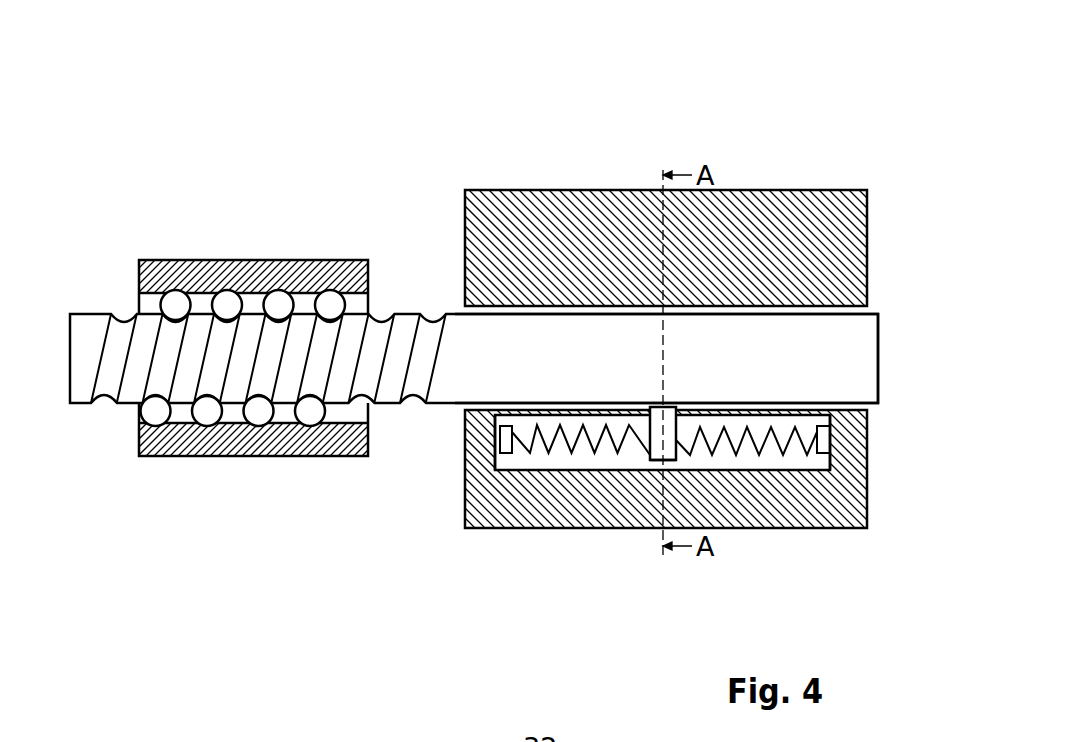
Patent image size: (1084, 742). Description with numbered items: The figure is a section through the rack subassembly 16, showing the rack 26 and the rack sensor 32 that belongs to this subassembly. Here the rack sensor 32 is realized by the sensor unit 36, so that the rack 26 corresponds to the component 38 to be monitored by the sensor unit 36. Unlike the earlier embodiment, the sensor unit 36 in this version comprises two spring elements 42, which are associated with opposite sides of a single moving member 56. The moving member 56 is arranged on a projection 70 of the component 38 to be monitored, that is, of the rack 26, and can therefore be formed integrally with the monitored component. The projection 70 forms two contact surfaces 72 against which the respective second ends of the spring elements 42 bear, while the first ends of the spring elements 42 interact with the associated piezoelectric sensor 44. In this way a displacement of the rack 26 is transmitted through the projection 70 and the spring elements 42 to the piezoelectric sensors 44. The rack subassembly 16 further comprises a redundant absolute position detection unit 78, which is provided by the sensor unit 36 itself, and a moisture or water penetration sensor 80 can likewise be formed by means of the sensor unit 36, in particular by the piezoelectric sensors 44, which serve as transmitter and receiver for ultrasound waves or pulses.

The rack subassembly 16 is at (474, 255).
The rack 26 is at (474, 273).
The rack sensor 32 is at (230, 188).
The sensor unit 36 is at (462, 160).
The component to be monitored 38 is at (763, 345).
The spring element 42 is at (508, 458).
The piezoelectric sensor 44 is at (495, 448).
The moving member 56 is at (666, 433).
The projection 70 is at (668, 453).
The contact surface 72 is at (641, 421).
The redundant absolute position detection unit 78 is at (661, 310).
The moisture or water penetration sensor 80 is at (661, 373).